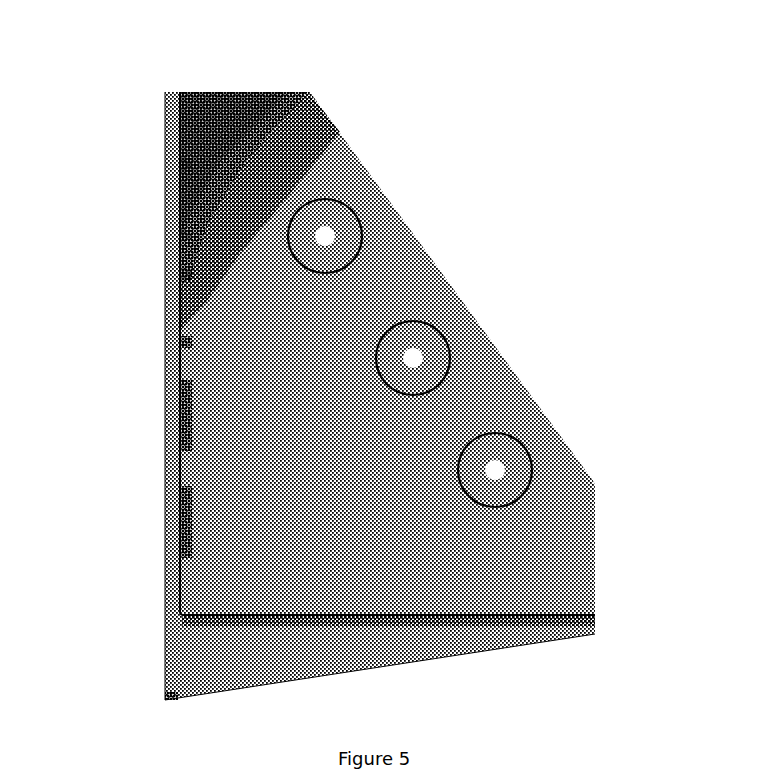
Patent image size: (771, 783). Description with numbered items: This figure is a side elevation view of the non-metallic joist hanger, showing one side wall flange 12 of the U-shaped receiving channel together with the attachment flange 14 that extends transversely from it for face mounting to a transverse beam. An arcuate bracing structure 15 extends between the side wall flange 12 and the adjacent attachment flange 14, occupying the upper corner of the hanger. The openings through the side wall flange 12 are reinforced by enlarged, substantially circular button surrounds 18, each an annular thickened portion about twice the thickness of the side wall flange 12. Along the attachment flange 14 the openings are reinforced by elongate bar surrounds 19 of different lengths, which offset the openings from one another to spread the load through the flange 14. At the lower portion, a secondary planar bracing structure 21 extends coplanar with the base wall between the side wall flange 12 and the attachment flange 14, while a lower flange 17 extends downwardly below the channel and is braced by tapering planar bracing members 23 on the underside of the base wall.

The side wall flange 12 is at (361, 148).
The attachment flange 14 is at (150, 129).
The arcuate bracing structure 15 is at (239, 121).
The lower flange 17 is at (141, 658).
The button surround 18 is at (366, 222).
The bar surround 19 is at (167, 189).
The secondary planar bracing structure 21 is at (551, 605).
The planar bracing member 23 is at (414, 650).